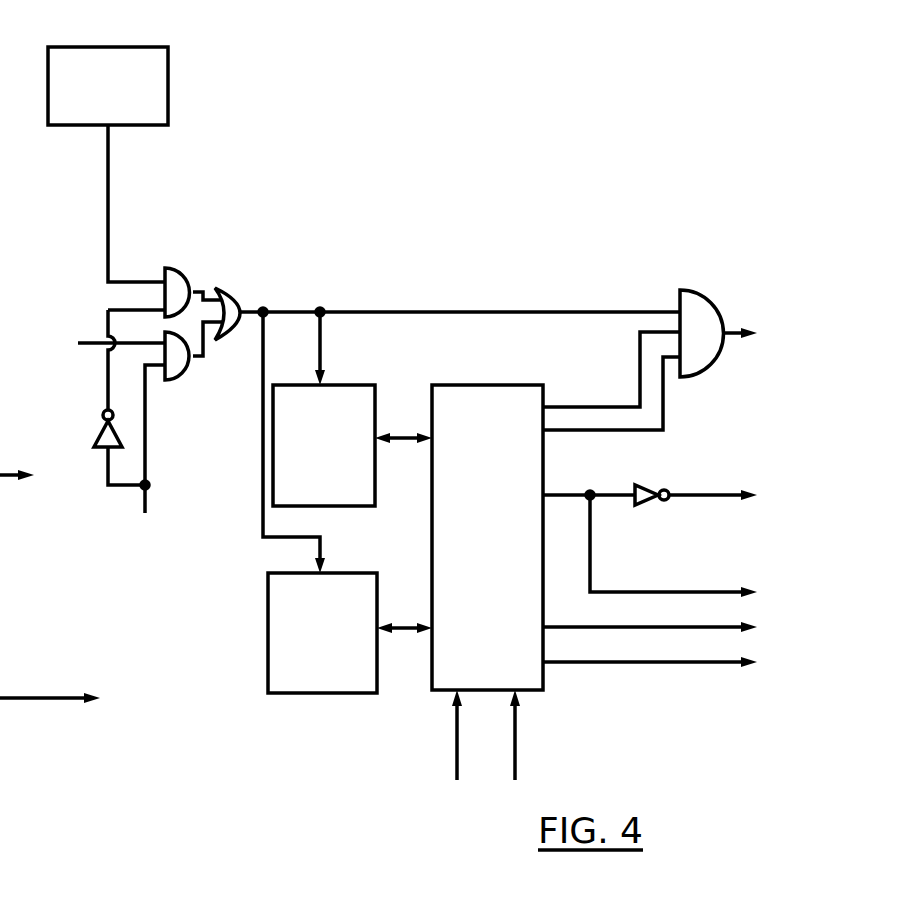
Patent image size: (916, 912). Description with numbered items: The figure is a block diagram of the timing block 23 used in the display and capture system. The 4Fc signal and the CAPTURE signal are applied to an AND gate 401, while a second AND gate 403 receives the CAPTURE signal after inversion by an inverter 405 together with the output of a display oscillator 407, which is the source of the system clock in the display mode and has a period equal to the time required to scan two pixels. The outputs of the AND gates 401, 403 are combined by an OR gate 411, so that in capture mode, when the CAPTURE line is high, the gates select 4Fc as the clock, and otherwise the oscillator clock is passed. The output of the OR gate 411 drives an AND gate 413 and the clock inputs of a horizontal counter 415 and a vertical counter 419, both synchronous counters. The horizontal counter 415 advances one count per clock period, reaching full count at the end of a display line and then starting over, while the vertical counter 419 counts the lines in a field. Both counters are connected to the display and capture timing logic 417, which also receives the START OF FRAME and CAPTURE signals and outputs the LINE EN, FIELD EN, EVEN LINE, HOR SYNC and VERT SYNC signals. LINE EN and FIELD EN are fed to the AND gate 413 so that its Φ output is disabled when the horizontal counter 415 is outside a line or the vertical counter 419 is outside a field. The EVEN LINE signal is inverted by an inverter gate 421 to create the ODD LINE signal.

The timing block 23 is at (462, 115).
The AND gate 401 is at (187, 385).
The AND gate 403 is at (182, 263).
The inverter 405 is at (95, 458).
The display oscillator 407 is at (108, 88).
The OR gate 411 is at (243, 288).
The AND gate 413 is at (689, 290).
The horizontal counter 415 is at (324, 447).
The display and capture timing logic 417 is at (487, 537).
The vertical counter 419 is at (322, 633).
The inverter gate 421 is at (656, 479).